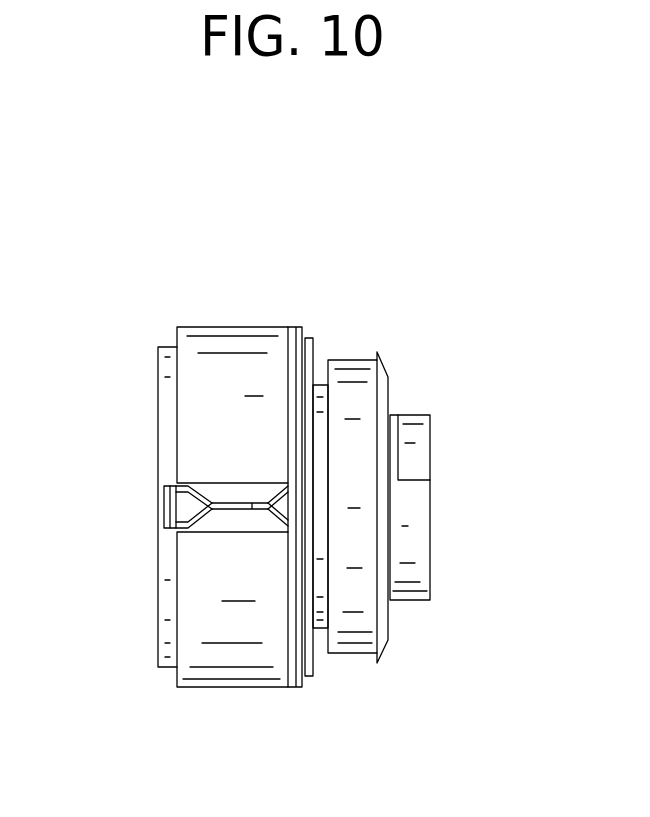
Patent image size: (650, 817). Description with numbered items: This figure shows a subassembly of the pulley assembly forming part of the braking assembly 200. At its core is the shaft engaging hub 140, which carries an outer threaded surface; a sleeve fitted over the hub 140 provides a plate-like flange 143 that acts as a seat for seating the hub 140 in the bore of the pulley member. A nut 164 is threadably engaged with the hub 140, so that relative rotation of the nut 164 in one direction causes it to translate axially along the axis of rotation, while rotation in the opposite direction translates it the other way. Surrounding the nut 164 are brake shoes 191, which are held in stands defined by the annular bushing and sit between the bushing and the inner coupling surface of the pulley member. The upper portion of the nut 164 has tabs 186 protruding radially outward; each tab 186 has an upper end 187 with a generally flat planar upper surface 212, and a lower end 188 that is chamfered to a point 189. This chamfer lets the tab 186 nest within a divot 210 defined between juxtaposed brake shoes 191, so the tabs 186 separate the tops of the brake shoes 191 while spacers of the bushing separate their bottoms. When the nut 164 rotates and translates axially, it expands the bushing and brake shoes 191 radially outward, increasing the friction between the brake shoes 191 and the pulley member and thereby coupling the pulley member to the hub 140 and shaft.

The braking assembly 200 is at (202, 318).
The brake shoes 191 is at (245, 342).
The nut 164 is at (165, 412).
The tab 186 is at (183, 488).
The upper end 187 is at (160, 517).
The lower end 188 is at (200, 500).
The point 189 is at (227, 506).
The divot 210 is at (198, 522).
The upper surface 212 is at (163, 498).
The shaft engaging hub 140 is at (415, 377).
The flange 143 is at (355, 653).